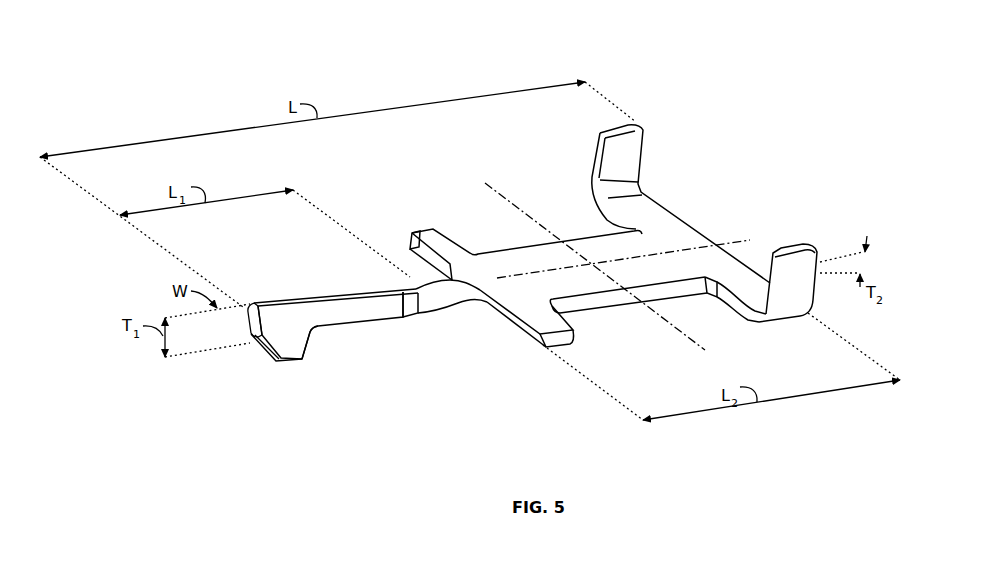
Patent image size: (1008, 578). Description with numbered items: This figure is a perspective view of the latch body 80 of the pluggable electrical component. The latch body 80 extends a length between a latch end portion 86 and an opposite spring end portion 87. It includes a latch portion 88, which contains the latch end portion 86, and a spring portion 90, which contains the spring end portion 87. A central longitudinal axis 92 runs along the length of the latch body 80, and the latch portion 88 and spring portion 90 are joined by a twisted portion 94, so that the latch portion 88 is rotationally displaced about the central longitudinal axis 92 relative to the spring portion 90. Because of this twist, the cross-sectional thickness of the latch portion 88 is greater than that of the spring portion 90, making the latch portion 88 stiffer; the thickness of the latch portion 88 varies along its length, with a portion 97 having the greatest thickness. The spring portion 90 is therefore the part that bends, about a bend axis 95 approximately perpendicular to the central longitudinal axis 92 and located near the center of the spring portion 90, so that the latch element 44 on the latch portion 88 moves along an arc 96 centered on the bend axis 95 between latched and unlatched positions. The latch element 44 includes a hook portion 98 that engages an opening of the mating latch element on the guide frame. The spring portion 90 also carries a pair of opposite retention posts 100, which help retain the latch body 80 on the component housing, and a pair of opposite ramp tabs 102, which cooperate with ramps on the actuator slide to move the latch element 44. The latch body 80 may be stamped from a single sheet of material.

The latch body 80 is at (659, 27).
The retention posts 100 is at (646, 151).
The central longitudinal axis 92 is at (749, 241).
The bend axis 95 is at (486, 183).
The ramp tabs 102 is at (413, 232).
The portion of the latch portion 97 is at (335, 287).
The arc 96 is at (251, 352).
The twisted portion 94 is at (457, 318).
The spring portion 90 is at (620, 318).
The spring end portion 87 is at (734, 324).
The latch portion 88 is at (339, 336).
The hook portion 98 is at (303, 361).
The latch end portion 86 is at (284, 382).
The latch element 44 is at (270, 373).